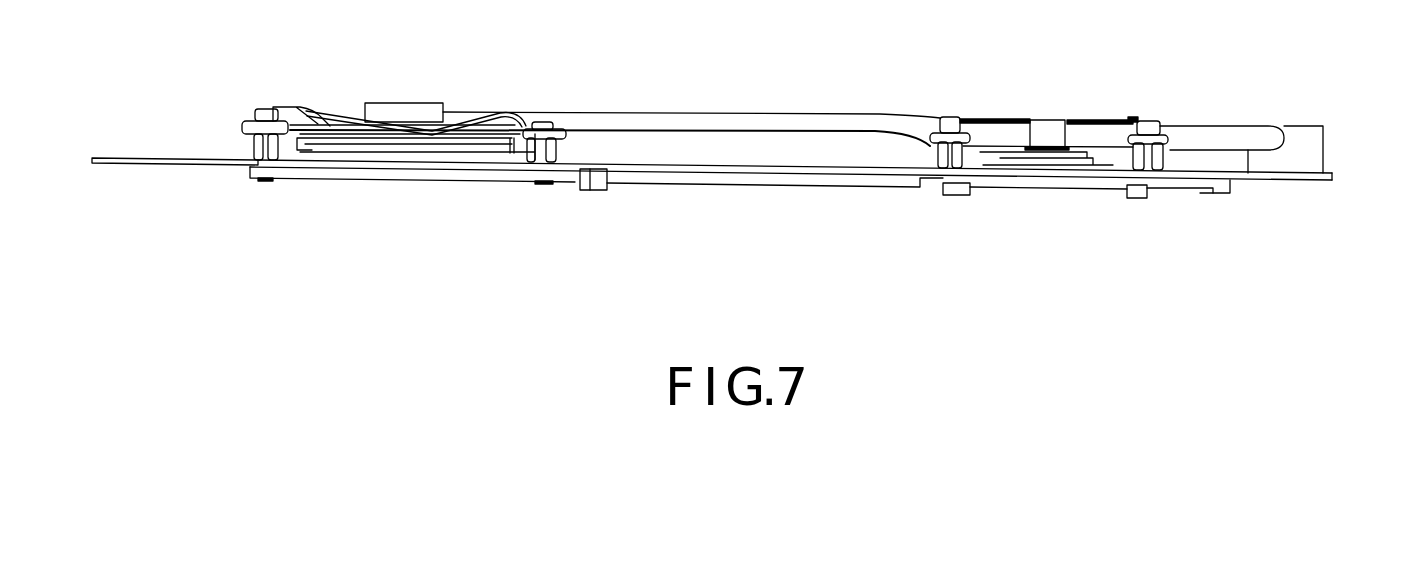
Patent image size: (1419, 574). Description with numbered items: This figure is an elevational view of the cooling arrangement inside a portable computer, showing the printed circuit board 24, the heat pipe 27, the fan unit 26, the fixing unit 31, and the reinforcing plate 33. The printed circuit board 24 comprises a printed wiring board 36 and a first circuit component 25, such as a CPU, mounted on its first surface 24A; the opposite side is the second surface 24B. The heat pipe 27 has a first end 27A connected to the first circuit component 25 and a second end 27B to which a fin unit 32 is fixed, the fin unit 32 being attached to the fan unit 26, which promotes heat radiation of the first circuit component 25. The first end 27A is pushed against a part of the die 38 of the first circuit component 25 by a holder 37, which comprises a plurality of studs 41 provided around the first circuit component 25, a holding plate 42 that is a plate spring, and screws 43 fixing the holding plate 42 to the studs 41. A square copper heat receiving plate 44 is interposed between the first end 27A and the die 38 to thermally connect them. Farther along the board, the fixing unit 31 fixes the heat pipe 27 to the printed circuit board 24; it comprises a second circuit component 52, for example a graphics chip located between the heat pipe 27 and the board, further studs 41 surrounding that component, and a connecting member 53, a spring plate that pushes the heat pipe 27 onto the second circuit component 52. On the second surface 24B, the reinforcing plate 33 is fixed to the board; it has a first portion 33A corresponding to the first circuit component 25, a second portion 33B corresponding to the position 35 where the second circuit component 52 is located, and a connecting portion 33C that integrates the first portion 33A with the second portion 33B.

The printed circuit board 24 is at (744, 190).
The first surface 24A is at (187, 158).
The second surface 24B is at (188, 166).
The first circuit component 25 is at (395, 153).
The fan unit 26 is at (1236, 175).
The heat pipe 27 is at (783, 102).
The first end 27A is at (352, 108).
The second end 27B is at (1250, 126).
The fixing unit 31 is at (1099, 108).
The fin unit 32 is at (1342, 120).
The reinforcing plate 33 is at (731, 227).
The first portion 33A is at (464, 182).
The second portion 33B is at (1093, 190).
The connecting portion 33C is at (782, 186).
The position different from the position of the first circuit component 35 is at (1000, 107).
The printed wiring board 36 is at (100, 158).
The holder 37 is at (412, 134).
The die 38 is at (365, 138).
The studs 41 is at (260, 162).
The holding plate 42 is at (395, 103).
The screws 43 is at (262, 112).
The heat receiving plate 44 is at (496, 112).
The second circuit component 52 is at (1044, 166).
The connecting member 53 is at (1055, 120).